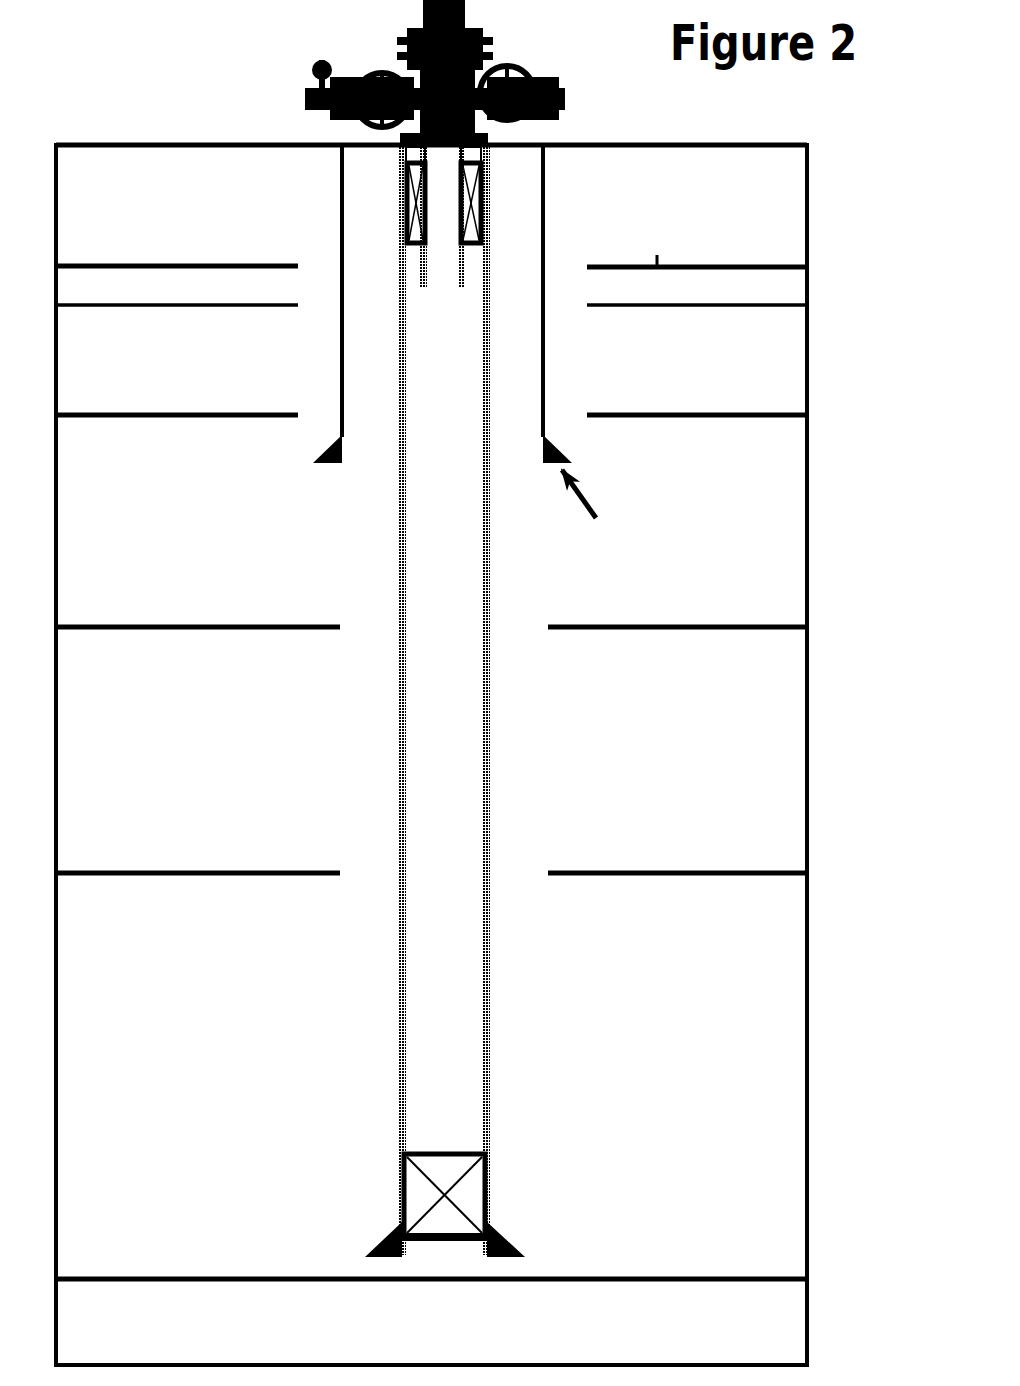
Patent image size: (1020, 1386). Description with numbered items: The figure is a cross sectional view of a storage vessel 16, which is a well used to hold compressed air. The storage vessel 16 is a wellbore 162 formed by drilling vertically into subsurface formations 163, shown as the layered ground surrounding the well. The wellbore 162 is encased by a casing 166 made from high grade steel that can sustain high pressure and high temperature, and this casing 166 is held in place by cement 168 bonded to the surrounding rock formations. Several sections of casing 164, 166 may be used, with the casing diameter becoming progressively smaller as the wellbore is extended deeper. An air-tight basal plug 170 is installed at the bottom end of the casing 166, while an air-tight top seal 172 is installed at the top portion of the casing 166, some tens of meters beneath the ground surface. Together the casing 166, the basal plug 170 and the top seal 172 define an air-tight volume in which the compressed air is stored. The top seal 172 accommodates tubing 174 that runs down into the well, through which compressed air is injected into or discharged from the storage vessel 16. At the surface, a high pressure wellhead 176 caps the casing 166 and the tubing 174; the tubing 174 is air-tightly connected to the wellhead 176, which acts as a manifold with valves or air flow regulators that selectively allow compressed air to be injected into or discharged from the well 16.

The storage vessel 16 is at (897, 327).
The wellbore 162 is at (548, 1233).
The subsurface formations 163 is at (693, 167).
The casing section 164 is at (431, 601).
The casing 166 is at (488, 920).
The cement 168 is at (520, 728).
The basal plug 170 is at (488, 1180).
The top seal 172 is at (497, 197).
The tubing 174 is at (440, 207).
The wellhead 176 is at (398, 15).